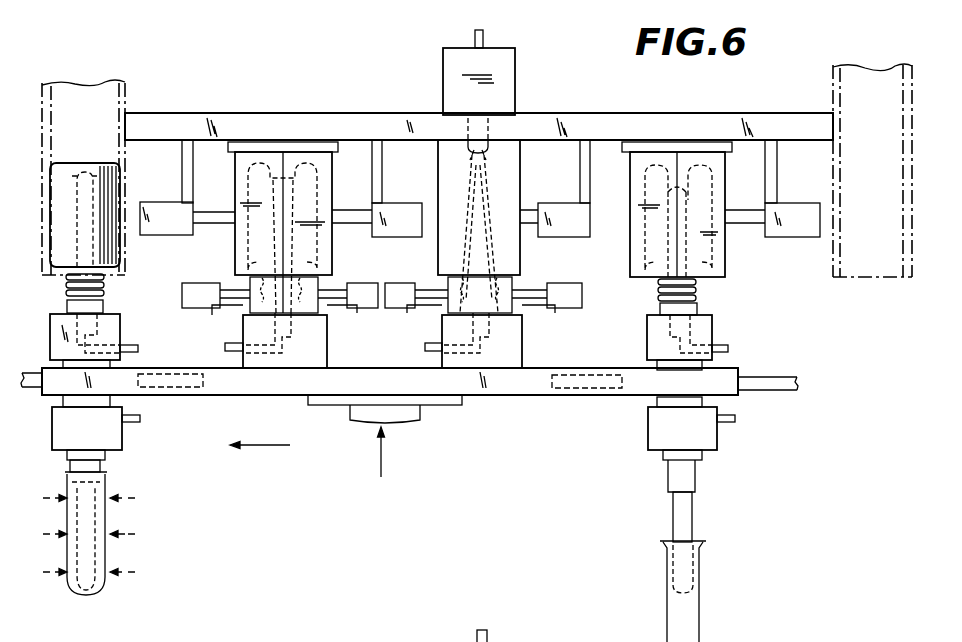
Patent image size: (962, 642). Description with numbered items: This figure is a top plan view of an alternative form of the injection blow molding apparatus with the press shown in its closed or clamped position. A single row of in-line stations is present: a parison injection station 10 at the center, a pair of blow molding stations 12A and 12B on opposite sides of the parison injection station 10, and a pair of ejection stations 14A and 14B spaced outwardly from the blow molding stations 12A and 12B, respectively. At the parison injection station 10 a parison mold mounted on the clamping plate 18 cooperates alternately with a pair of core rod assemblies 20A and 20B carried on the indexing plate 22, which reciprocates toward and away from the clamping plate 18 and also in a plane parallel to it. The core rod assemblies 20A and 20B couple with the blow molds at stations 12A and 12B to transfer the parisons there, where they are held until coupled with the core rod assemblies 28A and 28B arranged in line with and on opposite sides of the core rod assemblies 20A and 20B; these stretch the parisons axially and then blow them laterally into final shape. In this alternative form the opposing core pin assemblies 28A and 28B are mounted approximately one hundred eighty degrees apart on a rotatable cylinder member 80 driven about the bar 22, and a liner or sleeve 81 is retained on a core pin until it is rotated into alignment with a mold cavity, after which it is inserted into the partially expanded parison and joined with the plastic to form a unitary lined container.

The ejection station 14A is at (131, 101).
The blow molding station 12A is at (340, 164).
The parison injection station 10 is at (522, 90).
The clamping plate 18 is at (572, 125).
The blow molding station 12B is at (625, 170).
The ejection station 14B is at (828, 90).
The core rod assembly 28A is at (125, 325).
The core rod assembly 20A is at (238, 330).
The core rod assembly 20B is at (526, 352).
The core rod assembly 28B is at (716, 328).
The rotatable cylinder member 80 is at (113, 379).
The liner or sleeve 81 is at (103, 590).
The indexing plate 22 is at (515, 397).